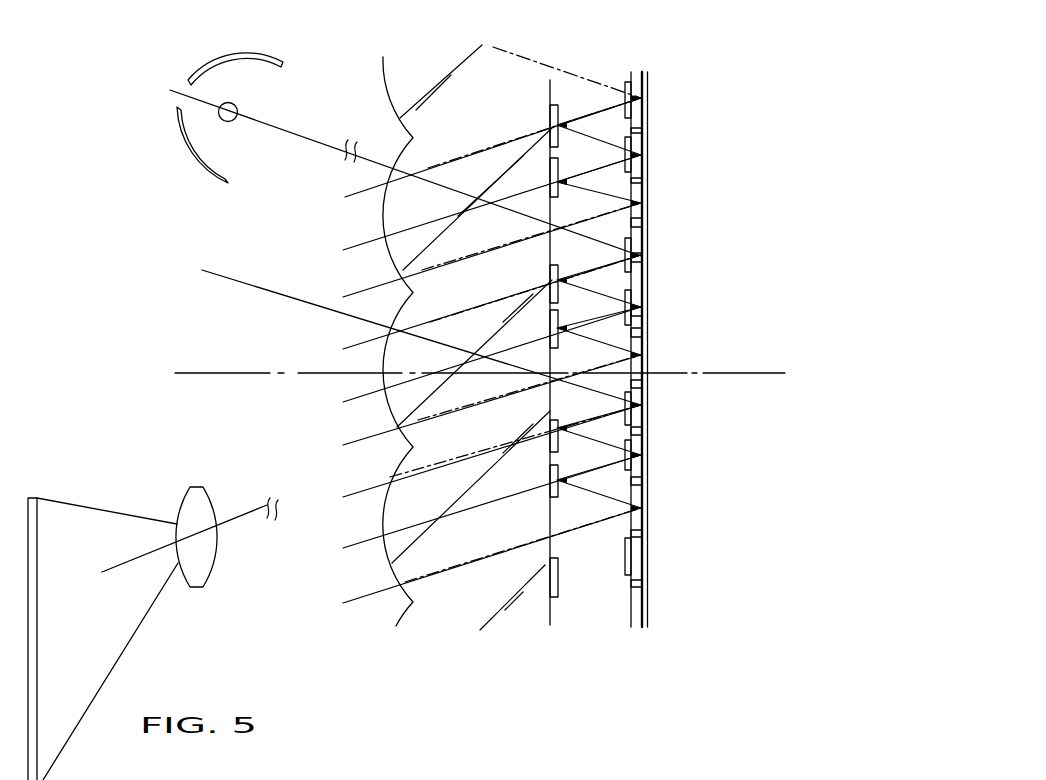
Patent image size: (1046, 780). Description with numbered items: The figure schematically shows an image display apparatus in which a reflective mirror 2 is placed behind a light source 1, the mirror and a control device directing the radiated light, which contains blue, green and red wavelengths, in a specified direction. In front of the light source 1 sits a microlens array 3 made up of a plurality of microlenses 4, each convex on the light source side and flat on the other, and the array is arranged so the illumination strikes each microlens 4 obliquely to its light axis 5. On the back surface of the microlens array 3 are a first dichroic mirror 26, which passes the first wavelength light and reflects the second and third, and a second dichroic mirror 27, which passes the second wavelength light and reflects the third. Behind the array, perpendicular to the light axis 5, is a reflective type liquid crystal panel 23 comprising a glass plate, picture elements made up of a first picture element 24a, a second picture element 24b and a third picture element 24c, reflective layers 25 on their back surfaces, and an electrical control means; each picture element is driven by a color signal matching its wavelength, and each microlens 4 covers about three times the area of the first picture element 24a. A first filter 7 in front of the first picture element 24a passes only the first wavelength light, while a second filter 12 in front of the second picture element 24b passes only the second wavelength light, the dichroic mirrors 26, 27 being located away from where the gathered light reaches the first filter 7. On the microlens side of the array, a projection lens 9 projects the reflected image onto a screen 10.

The light source 1 is at (228, 122).
The reflective mirror 2 is at (176, 118).
The microlens array 3 is at (408, 418).
The microlens 4 is at (383, 212).
The light axis 5 is at (735, 377).
The first filter 7 is at (643, 222).
The projection lens 9 is at (197, 588).
The screen 10 is at (35, 497).
The second filter 12 is at (631, 295).
The reflective type liquid crystal panel 23 is at (670, 319).
The first picture element 24a is at (636, 246).
The second picture element 24b is at (643, 316).
The third picture element 24c is at (643, 347).
The reflective layer 25 is at (649, 87).
The first dichroic mirror 26 is at (552, 275).
The second dichroic mirror 27 is at (550, 325).